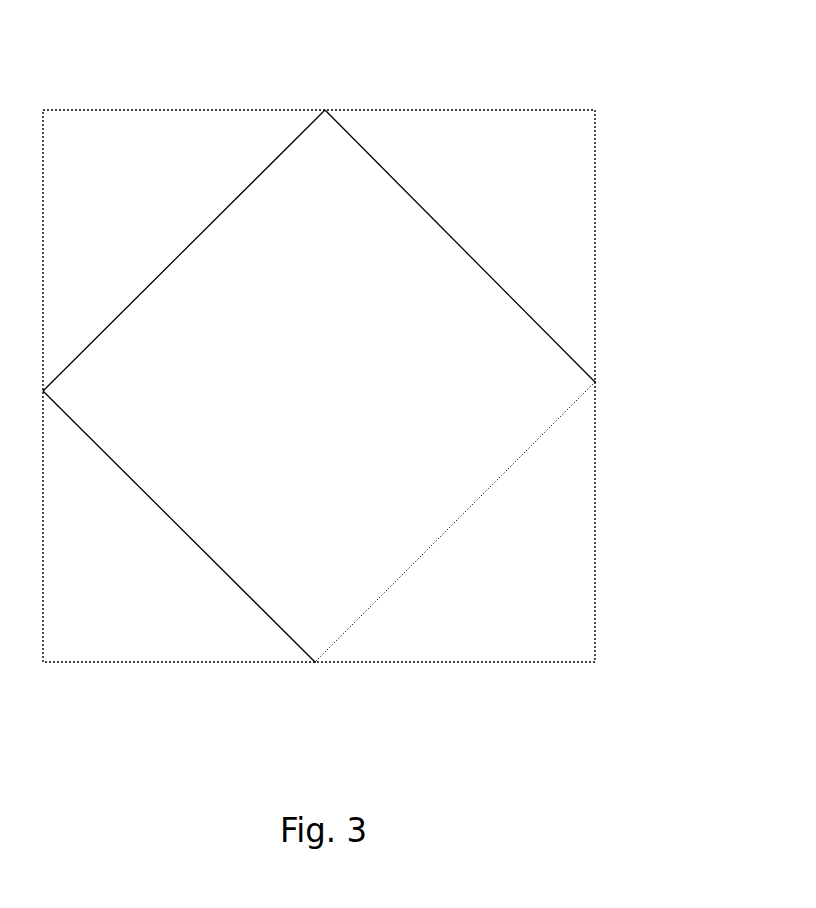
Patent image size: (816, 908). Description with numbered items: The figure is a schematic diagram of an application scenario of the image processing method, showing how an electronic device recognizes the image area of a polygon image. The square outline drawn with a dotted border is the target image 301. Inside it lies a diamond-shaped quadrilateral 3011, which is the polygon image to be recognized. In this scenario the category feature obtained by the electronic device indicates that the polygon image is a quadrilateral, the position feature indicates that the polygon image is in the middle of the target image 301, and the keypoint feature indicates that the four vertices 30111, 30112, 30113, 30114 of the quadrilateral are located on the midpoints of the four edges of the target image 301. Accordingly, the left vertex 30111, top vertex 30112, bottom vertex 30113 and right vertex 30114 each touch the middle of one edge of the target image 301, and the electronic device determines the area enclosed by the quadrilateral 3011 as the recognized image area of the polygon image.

The target image 301 is at (596, 251).
The quadrilateral 3011 is at (468, 252).
The vertex 30111 is at (43, 391).
The vertex 30112 is at (325, 110).
The vertex 30113 is at (316, 660).
The vertex 30114 is at (595, 382).